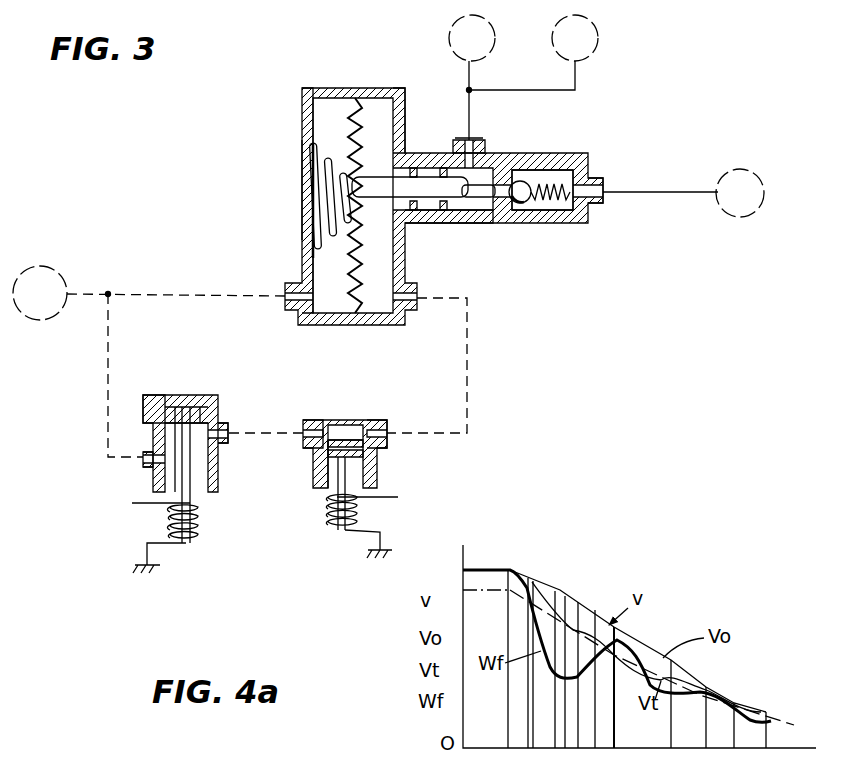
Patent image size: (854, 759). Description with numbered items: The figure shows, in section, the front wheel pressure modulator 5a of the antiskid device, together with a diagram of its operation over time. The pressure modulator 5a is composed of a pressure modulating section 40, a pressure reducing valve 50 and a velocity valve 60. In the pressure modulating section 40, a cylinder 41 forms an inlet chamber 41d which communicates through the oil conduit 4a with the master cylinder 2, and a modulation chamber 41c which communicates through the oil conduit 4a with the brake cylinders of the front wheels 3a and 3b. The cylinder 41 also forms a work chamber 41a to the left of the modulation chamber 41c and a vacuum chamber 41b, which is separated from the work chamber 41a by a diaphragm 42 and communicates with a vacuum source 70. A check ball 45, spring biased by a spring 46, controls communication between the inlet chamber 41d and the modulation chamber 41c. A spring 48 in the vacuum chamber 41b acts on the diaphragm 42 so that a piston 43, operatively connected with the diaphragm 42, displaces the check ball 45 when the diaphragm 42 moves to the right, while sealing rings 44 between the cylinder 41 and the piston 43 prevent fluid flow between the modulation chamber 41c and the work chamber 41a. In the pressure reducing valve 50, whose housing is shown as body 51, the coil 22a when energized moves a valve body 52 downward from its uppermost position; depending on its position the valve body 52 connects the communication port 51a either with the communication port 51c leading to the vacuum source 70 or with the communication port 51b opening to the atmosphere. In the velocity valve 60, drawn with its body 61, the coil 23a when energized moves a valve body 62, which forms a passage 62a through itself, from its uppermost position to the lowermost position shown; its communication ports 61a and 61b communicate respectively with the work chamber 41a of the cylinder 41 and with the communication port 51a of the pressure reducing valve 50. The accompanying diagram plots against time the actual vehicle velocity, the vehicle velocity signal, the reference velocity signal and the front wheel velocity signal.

The master cylinder 2 is at (724, 176).
The front wheel 3a is at (450, 34).
The front wheel 3b is at (598, 34).
The oil conduit 4a is at (530, 91).
The front wheel pressure modulator 5a is at (292, 158).
The coil 22a is at (170, 525).
The coil 23a is at (330, 530).
The pressure modulating section 40 is at (452, 189).
The cylinder 41 is at (590, 165).
The work chamber 41a is at (373, 103).
The vacuum chamber 41b is at (327, 94).
The modulation chamber 41c is at (482, 214).
The inlet chamber 41d is at (566, 170).
The diaphragm 42 is at (357, 128).
The piston 43 is at (463, 206).
The sealing rings 44 is at (413, 166).
The check ball 45 is at (537, 213).
The spring 46 is at (592, 208).
The spring 48 is at (316, 208).
The pressure reducing valve 50 is at (176, 461).
The first valve body 51 is at (214, 494).
The communication port 51a is at (226, 445).
The communication port 51b is at (150, 400).
The communication port 51c is at (143, 462).
The valve body 52 is at (210, 410).
The velocity valve 60 is at (360, 461).
The second valve body 61 is at (378, 477).
The communication port 61a is at (385, 427).
The communication port 61b is at (306, 427).
The valve body 62 is at (372, 458).
The passage 62a is at (322, 458).
The vacuum source 70 is at (57, 270).